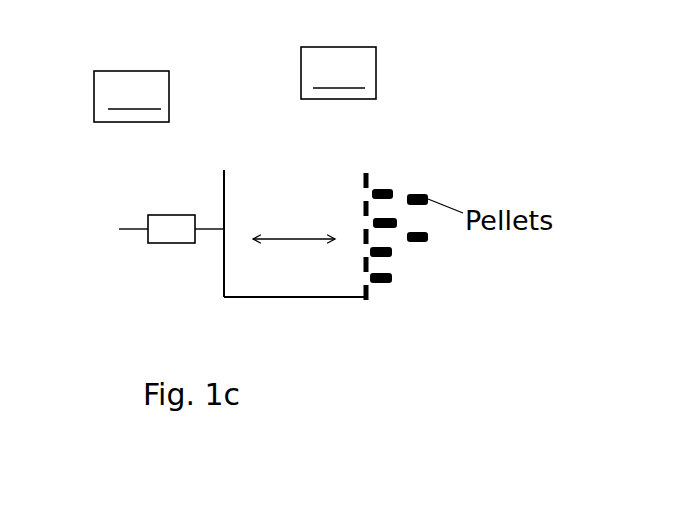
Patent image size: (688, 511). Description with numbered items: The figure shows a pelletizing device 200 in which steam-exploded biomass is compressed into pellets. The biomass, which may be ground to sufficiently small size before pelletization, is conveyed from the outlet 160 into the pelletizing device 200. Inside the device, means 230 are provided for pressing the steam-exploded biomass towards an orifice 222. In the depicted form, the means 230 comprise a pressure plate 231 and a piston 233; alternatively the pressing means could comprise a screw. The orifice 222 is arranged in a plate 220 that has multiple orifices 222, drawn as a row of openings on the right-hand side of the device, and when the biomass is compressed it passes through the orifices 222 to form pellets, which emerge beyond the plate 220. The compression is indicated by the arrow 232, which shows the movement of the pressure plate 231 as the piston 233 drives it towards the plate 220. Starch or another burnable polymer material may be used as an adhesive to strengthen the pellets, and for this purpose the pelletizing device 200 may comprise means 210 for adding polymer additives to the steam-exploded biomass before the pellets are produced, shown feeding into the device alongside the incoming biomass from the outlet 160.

The outlet 160 is at (258, 175).
The pelletizing device 200 is at (275, 123).
The means for adding polymer additives 210 is at (312, 157).
The plate 220 is at (368, 173).
The orifice 222 is at (362, 247).
The means for pressing 230 is at (160, 268).
The pressure plate 231 is at (223, 183).
The arrow 232 is at (283, 240).
The piston 233 is at (163, 230).